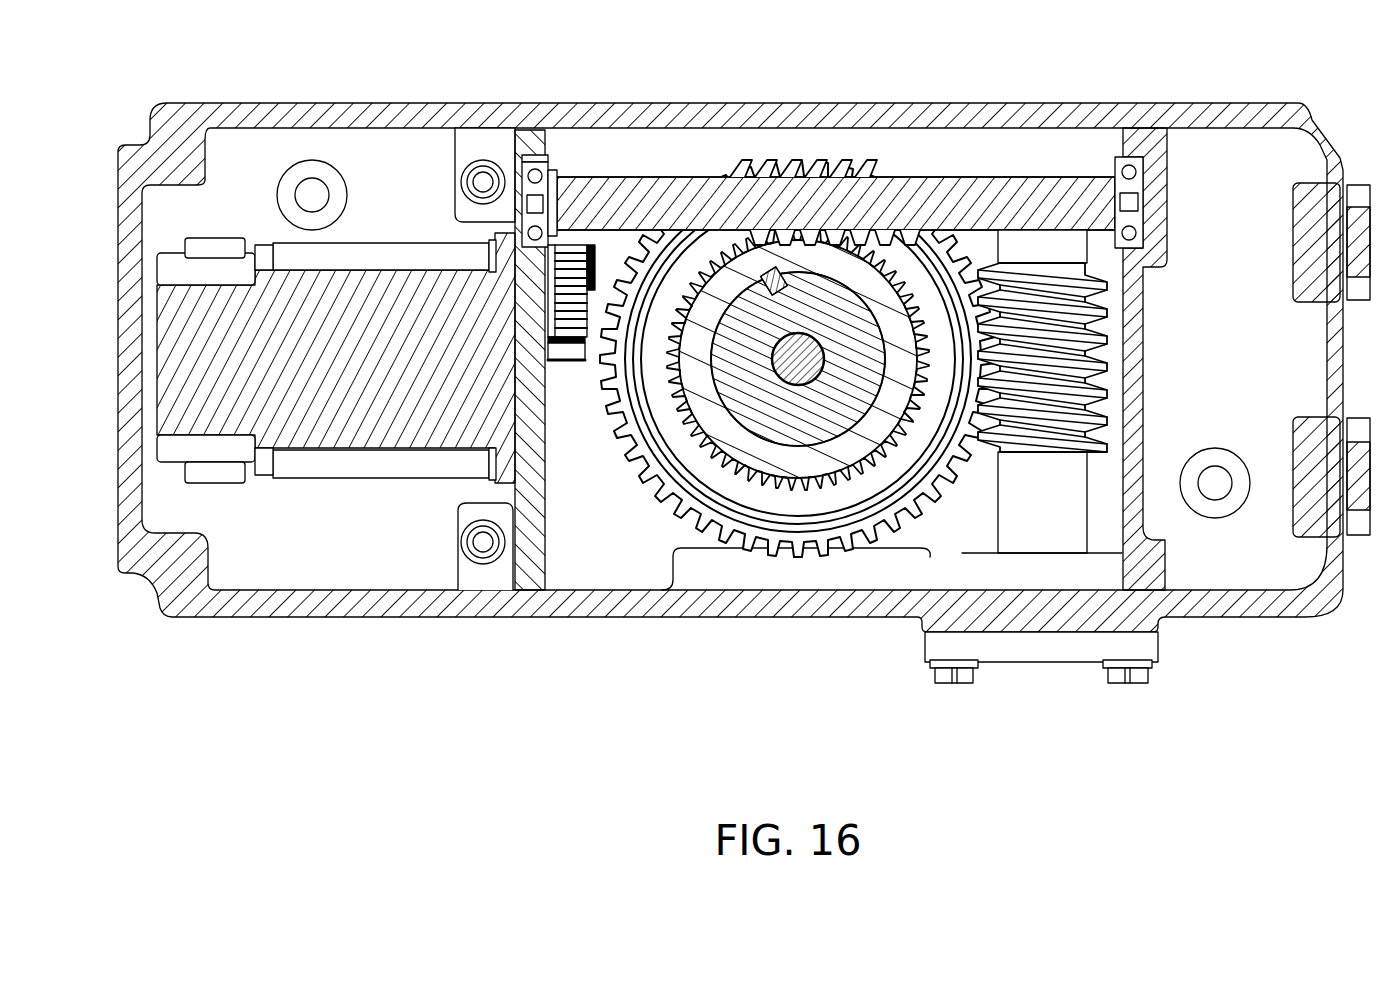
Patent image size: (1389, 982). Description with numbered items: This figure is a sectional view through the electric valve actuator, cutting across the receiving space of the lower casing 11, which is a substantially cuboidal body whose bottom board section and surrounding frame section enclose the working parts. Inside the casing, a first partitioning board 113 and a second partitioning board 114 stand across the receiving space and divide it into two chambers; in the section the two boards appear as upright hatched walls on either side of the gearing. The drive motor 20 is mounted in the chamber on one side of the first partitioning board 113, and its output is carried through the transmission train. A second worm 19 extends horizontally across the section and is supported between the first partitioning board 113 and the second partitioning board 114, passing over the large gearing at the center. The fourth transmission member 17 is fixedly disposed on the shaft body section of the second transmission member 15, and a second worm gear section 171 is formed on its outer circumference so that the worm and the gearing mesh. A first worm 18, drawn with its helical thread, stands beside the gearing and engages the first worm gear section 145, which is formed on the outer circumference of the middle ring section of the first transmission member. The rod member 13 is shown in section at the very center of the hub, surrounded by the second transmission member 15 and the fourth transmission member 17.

The lower casing 11 is at (237, 103).
The drive motor 20 is at (385, 340).
The first partitioning board 113 is at (533, 555).
The second partitioning board 114 is at (1142, 450).
The rod member 13 is at (797, 367).
The second transmission member 15 is at (749, 336).
The fourth transmission member 17 is at (737, 441).
The second worm gear section 171 is at (857, 255).
The first worm gear section 145 is at (957, 483).
The first worm 18 is at (1047, 390).
The second worm 19 is at (957, 207).